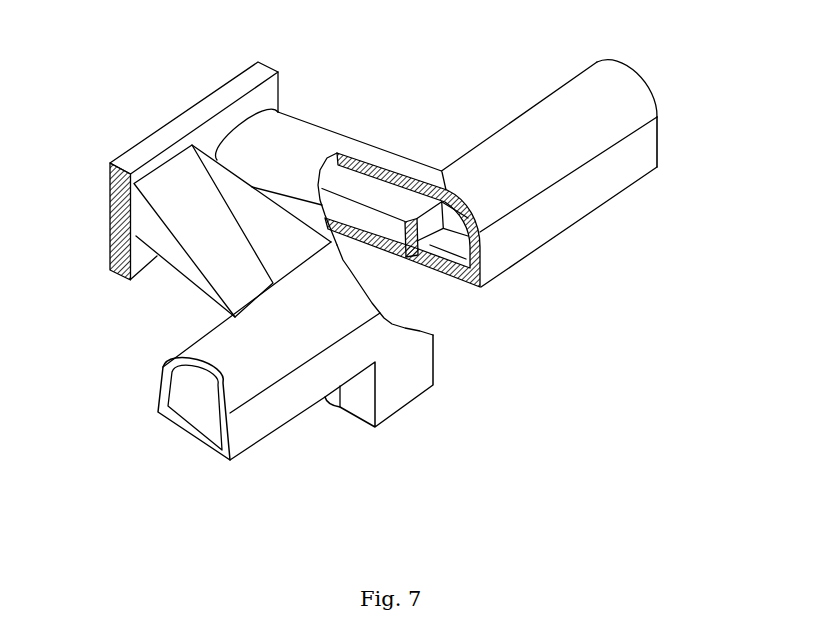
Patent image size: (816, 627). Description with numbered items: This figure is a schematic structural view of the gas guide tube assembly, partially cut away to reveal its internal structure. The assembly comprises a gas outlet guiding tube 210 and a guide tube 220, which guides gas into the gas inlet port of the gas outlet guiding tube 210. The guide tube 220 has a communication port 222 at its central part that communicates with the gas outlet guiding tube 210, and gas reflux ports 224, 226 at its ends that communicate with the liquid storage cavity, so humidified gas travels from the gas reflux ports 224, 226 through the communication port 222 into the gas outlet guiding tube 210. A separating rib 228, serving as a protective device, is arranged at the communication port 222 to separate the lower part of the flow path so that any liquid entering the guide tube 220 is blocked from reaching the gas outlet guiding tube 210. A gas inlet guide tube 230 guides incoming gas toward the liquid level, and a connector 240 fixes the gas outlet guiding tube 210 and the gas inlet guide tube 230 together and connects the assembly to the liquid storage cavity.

The gas outlet guiding tube 210 is at (267, 147).
The guide tube 220 is at (585, 110).
The communication port 222 is at (441, 171).
The gas reflux port 224 is at (203, 422).
The gas reflux port 226 is at (642, 150).
The separating rib 228 is at (416, 257).
The gas inlet guide tube 230 is at (187, 255).
The connector 240 is at (148, 153).